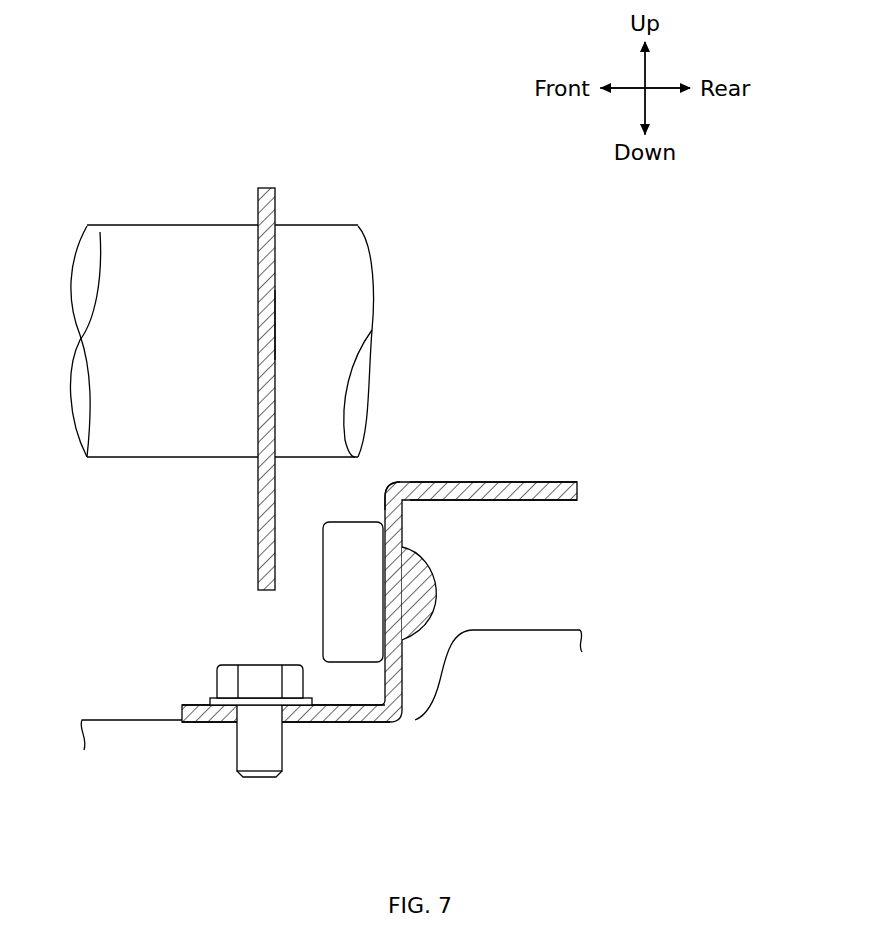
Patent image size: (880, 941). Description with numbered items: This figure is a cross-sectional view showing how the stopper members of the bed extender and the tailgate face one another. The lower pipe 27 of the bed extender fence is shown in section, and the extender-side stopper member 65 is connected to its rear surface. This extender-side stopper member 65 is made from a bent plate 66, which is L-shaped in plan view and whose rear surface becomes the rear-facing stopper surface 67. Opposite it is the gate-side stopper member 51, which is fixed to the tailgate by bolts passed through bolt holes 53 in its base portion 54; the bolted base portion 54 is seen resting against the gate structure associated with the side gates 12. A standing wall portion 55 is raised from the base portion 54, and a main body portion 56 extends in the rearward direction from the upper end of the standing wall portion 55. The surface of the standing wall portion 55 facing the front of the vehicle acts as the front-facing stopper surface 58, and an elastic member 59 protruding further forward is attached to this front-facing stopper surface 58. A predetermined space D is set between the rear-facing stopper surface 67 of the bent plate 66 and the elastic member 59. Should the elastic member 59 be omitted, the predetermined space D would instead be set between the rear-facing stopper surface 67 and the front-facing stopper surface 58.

The side gate 12 is at (528, 648).
The lower pipe 27 is at (170, 258).
The gate-side stopper member 51 is at (446, 558).
The bolt hole 53 is at (242, 752).
The base portion 54 is at (178, 718).
The standing wall portion 55 is at (405, 528).
The main body portion 56 is at (505, 483).
The front-facing stopper surface 58 is at (375, 505).
The elastic member 59 is at (350, 533).
The extender-side stopper member 65 is at (305, 180).
The bent plate 66 is at (265, 185).
The rear-facing stopper surface 67 is at (277, 325).
The predetermined space D is at (278, 563).